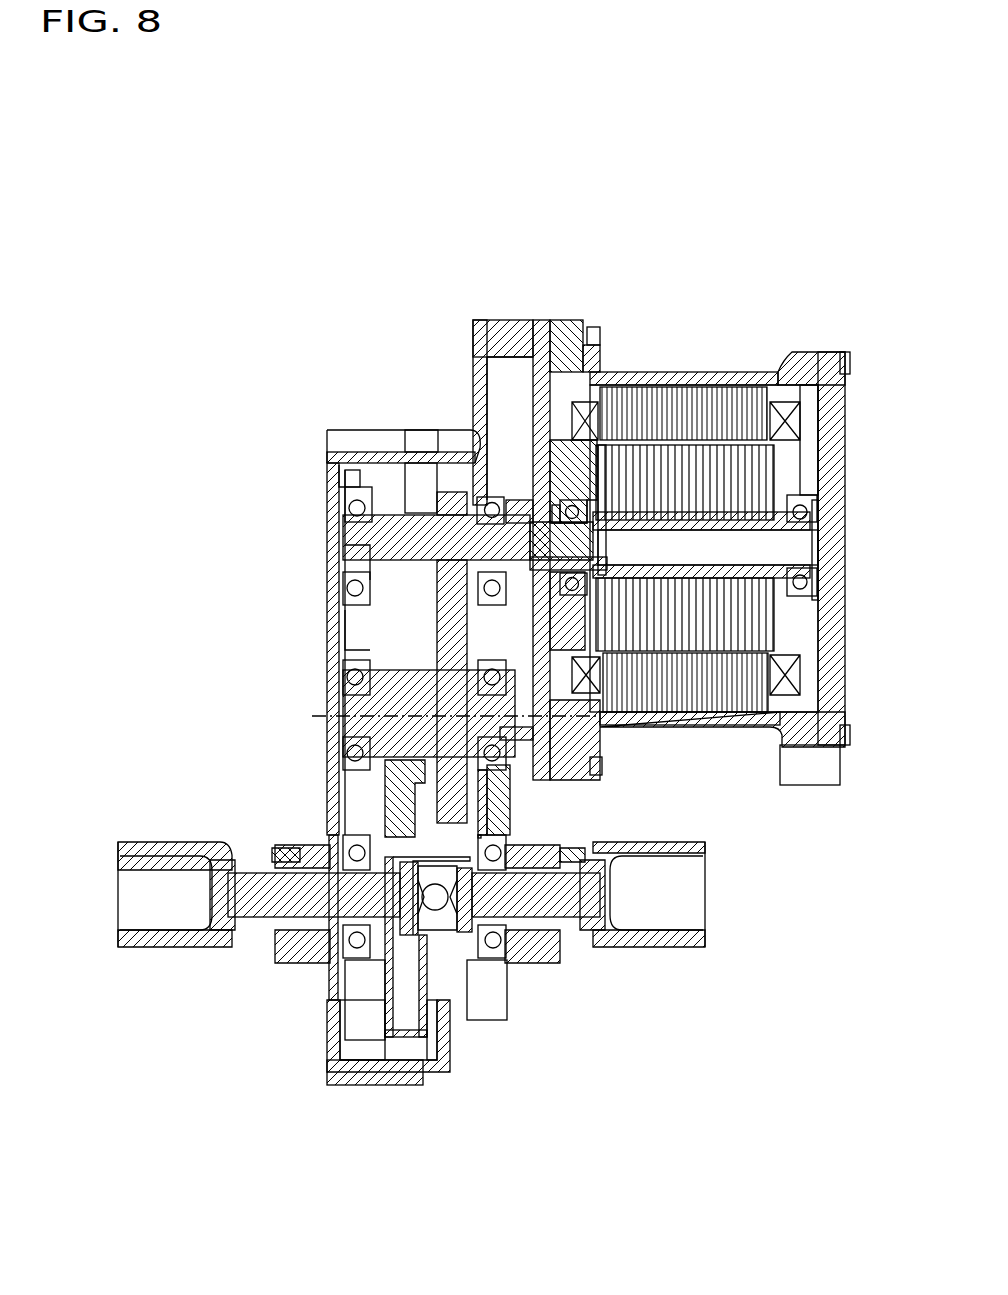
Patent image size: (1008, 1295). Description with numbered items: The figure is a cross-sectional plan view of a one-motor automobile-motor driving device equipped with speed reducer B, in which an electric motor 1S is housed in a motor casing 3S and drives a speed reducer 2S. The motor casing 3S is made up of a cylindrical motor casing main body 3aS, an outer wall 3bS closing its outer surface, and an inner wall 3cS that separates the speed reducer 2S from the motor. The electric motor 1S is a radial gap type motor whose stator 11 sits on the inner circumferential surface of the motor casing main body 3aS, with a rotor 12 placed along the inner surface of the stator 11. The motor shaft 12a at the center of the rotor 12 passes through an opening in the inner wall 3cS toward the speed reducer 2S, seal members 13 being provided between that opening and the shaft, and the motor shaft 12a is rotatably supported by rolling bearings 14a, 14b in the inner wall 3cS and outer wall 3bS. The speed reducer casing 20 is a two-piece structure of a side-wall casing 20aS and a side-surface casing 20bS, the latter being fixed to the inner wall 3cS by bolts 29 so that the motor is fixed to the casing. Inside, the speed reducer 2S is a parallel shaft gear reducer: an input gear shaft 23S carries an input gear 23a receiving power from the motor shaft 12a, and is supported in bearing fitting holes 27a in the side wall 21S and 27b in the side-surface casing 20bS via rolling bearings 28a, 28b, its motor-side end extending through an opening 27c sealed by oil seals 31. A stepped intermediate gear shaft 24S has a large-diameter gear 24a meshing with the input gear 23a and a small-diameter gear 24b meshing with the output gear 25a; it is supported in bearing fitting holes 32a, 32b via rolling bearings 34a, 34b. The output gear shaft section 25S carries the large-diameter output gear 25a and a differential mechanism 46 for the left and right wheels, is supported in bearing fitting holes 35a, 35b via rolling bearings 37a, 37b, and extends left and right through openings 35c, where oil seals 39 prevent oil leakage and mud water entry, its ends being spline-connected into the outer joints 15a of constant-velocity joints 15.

The one-motor automobile-motor driving device equipped with speed reducer B is at (350, 283).
The electric motor 1S is at (812, 790).
The speed reducer 2S is at (507, 1030).
The motor casing 3S is at (830, 245).
The motor casing main body 3aS is at (808, 420).
The outer wall 3bS is at (832, 400).
The inner wall 3cS is at (588, 500).
The stator 11 is at (725, 668).
The rotor 12 is at (680, 612).
The motor shaft 12a is at (735, 565).
The seal members 13 is at (592, 410).
The rolling bearing 14a is at (575, 590).
The rolling bearing 14b is at (812, 592).
The constant-velocity joints 15 is at (138, 884).
The outer joints 15a is at (180, 947).
The speed reducer casing 20 is at (495, 1138).
The side-wall casing 20aS is at (348, 1020).
The side-surface casing 20bS is at (470, 1000).
The side wall 21S is at (345, 718).
The input gear shaft 23S is at (425, 452).
The input gear 23a is at (462, 462).
The intermediate gear shaft 24S is at (405, 470).
The large-diameter gear 24a is at (418, 500).
The small-diameter gear 24b is at (432, 676).
The output gear shaft section 25S is at (377, 972).
The output gear 25a is at (407, 1040).
The bearing fitting hole 27a is at (350, 492).
The bearing fitting hole 27b is at (540, 510).
The opening 27c is at (558, 460).
The rolling bearing 28a is at (348, 520).
The rolling bearing 28b is at (500, 497).
The bolts 29 is at (558, 500).
The oil seals 31 is at (545, 510).
The bearing fitting hole 32a is at (357, 665).
The bearing fitting hole 32b is at (500, 780).
The rolling bearing 34a is at (350, 685).
The rolling bearing 34b is at (500, 800).
The bearing fitting hole 35a is at (343, 950).
The bearing fitting hole 35b is at (478, 962).
The openings 35c is at (290, 932).
The rolling bearing 37a is at (343, 948).
The rolling bearing 37b is at (500, 950).
The oil seals 39 is at (290, 862).
The differential mechanism 46 is at (430, 905).